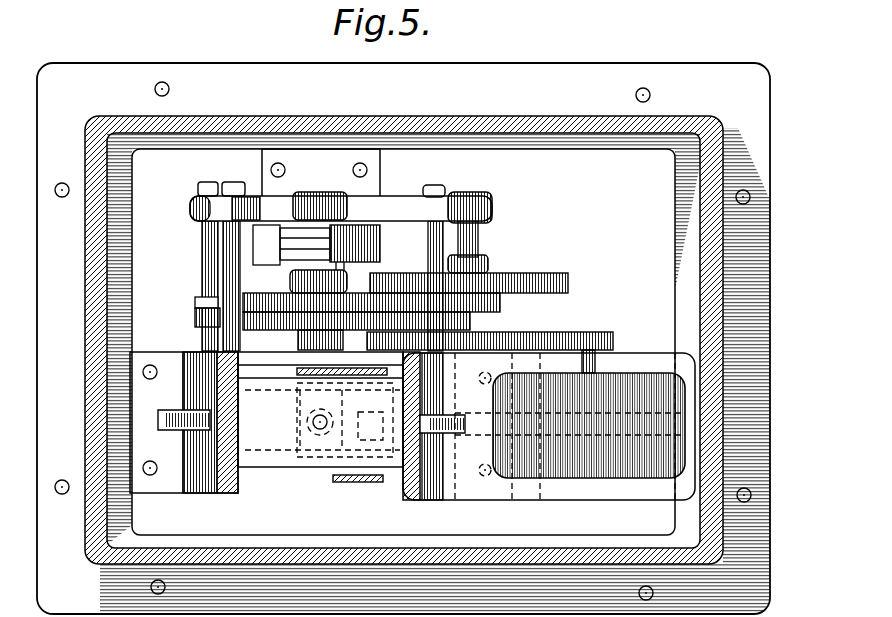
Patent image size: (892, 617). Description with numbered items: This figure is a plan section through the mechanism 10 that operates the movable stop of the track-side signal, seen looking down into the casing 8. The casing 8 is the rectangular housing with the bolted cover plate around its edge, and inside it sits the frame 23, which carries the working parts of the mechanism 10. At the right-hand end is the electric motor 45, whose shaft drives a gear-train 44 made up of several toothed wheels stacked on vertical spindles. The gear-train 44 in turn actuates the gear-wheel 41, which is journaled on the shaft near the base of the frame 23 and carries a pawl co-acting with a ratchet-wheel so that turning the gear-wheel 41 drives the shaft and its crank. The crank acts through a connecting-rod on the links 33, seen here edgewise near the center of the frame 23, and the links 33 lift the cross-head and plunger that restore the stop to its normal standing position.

The casing 8 is at (418, 560).
The mechanism 10 is at (404, 340).
The frame 23 is at (407, 490).
The links 33 is at (327, 377).
The gear-wheel 41 is at (195, 318).
The gear-train 44 is at (582, 332).
The electric motor 45 is at (590, 392).